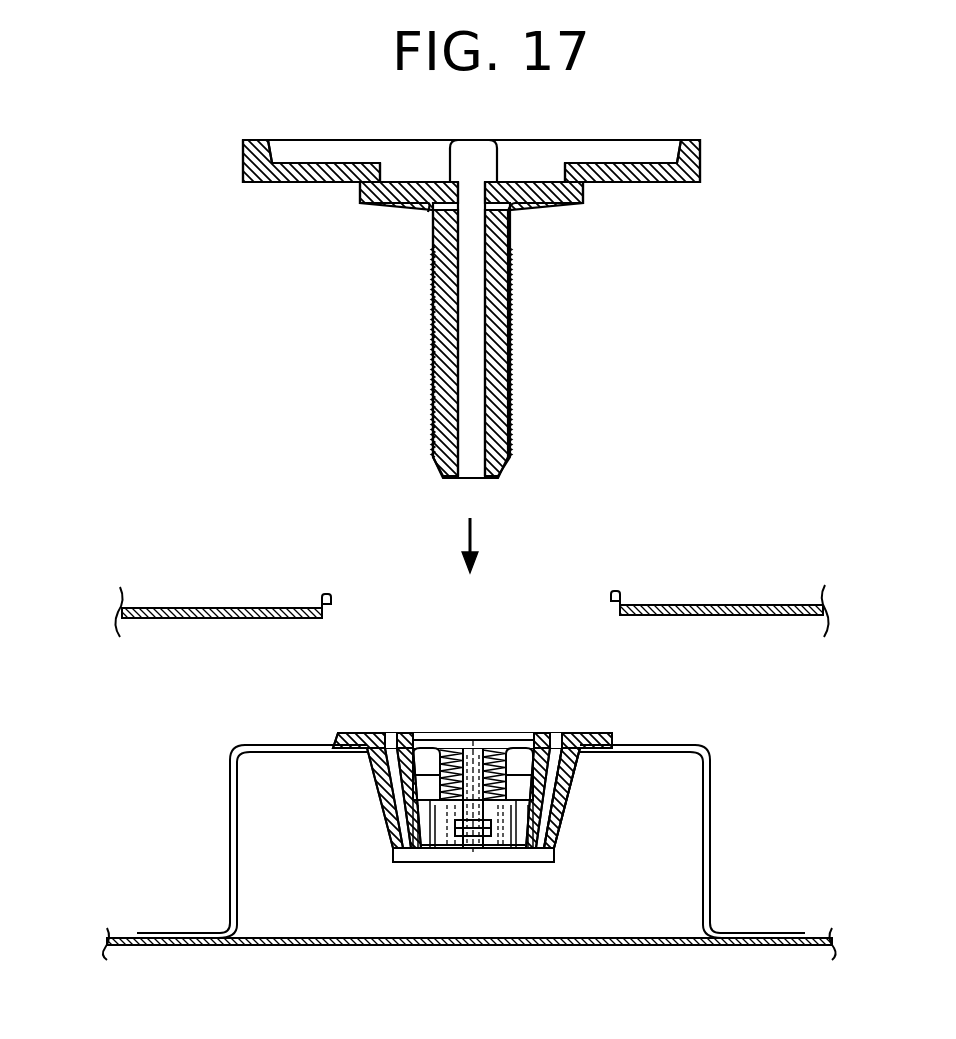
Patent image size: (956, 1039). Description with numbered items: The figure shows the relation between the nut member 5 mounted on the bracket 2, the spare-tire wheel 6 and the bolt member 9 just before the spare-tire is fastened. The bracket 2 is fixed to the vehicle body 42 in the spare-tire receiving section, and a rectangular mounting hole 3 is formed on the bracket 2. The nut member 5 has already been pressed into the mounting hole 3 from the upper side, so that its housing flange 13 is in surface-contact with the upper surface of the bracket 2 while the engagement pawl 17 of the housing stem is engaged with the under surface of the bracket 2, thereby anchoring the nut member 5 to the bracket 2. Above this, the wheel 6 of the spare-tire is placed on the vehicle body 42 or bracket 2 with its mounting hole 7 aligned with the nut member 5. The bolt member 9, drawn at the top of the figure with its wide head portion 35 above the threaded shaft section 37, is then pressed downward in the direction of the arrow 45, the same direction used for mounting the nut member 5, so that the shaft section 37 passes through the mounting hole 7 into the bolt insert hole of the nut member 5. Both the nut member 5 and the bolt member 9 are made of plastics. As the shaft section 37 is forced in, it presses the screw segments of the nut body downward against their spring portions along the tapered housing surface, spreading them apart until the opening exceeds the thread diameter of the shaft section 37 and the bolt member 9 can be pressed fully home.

The bracket 2 is at (265, 745).
The mounting hole 3 is at (556, 738).
The nut member 5 is at (471, 803).
The wheel 6 is at (183, 608).
The mounting hole 7 is at (328, 600).
The bolt member 9 is at (522, 262).
The housing flange 13 is at (610, 735).
The engagement pawl 17 is at (572, 757).
The head plate 35 is at (688, 140).
The shaft section 37 is at (510, 343).
The vehicle body 42 is at (340, 945).
The arrow 45 is at (472, 528).